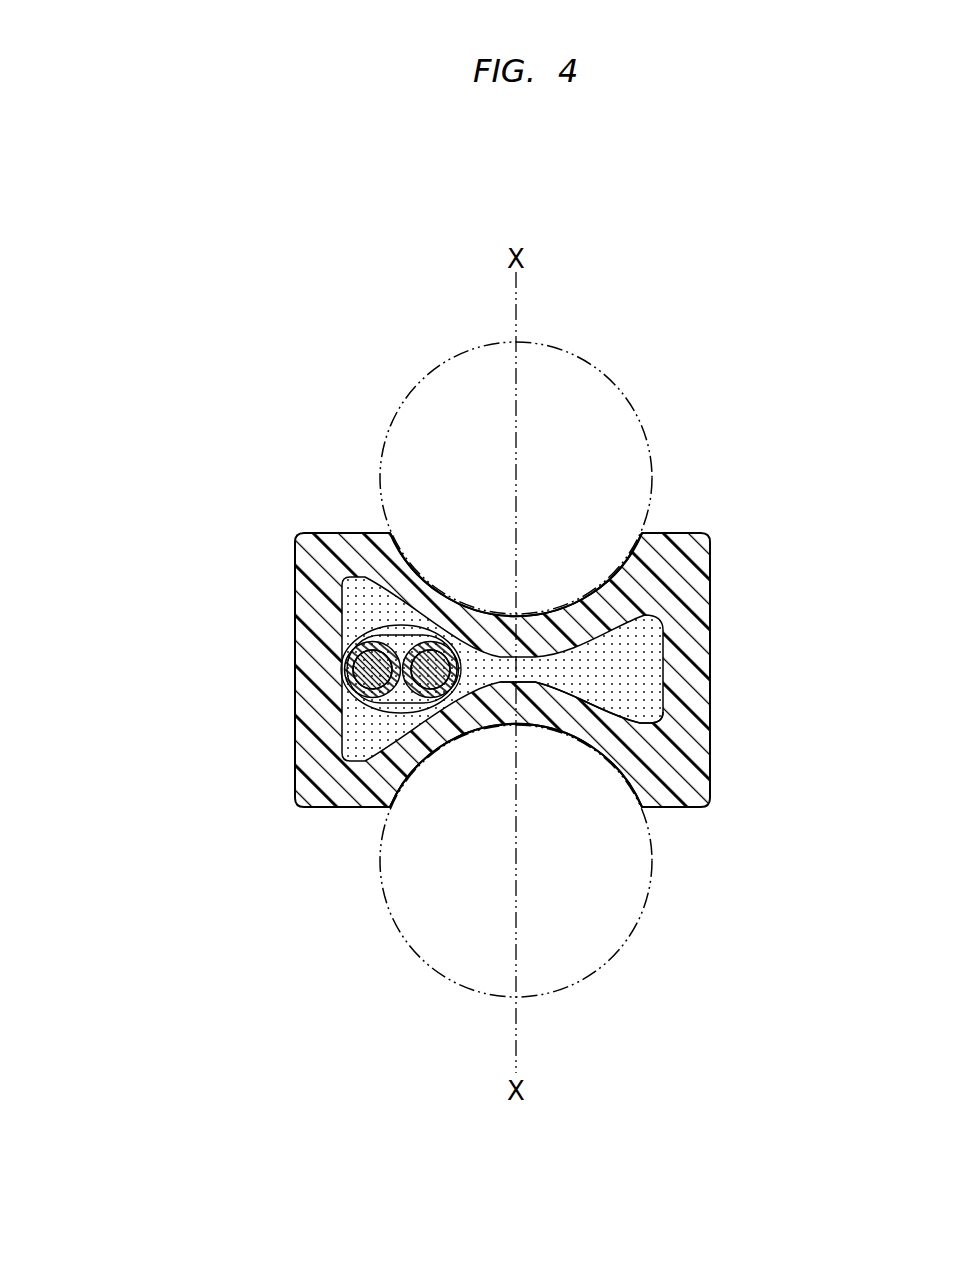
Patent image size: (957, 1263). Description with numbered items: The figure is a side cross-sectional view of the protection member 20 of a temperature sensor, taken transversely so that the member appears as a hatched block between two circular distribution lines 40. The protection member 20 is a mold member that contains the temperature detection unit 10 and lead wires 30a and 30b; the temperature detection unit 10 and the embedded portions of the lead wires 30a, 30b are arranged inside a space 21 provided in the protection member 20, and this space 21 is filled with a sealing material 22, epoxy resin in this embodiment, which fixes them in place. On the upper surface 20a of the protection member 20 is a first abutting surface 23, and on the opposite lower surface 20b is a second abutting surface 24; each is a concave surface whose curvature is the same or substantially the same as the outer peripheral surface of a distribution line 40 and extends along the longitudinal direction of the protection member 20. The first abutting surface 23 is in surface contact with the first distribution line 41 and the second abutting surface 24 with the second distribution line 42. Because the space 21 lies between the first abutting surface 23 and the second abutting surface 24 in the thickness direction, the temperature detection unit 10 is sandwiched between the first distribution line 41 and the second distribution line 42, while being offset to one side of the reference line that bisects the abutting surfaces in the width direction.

The temperature detection unit 10 is at (343, 642).
The protection member 20 is at (268, 602).
The upper surface 20a is at (345, 532).
The lower surface 20b is at (343, 810).
The space 21 is at (663, 652).
The sealing material 22 is at (653, 703).
The first abutting surface 23 is at (636, 552).
The second abutting surface 24 is at (641, 806).
The lead wire 30a is at (428, 698).
The lead wire 30b is at (385, 698).
The distribution line 40 is at (498, 668).
The first distribution line 41 is at (453, 355).
The second distribution line 42 is at (452, 980).